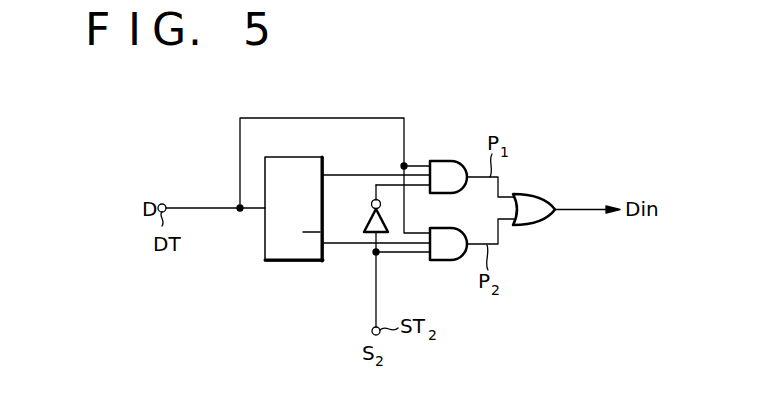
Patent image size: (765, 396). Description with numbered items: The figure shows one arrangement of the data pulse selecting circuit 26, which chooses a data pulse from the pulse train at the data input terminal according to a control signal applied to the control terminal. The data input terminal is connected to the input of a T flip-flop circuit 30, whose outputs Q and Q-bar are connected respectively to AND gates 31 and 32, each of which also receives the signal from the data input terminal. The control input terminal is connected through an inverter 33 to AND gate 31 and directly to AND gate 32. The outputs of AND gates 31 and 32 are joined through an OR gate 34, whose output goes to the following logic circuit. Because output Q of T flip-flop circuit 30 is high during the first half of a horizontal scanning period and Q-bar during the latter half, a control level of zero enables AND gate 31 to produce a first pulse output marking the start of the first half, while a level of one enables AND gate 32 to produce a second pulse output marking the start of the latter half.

The data pulse selecting circuit 26 is at (386, 106).
The T flip-flop circuit 30 is at (281, 262).
The AND gate 31 is at (441, 161).
The AND gate 32 is at (452, 228).
The inverter 33 is at (371, 219).
The OR gate 34 is at (537, 194).